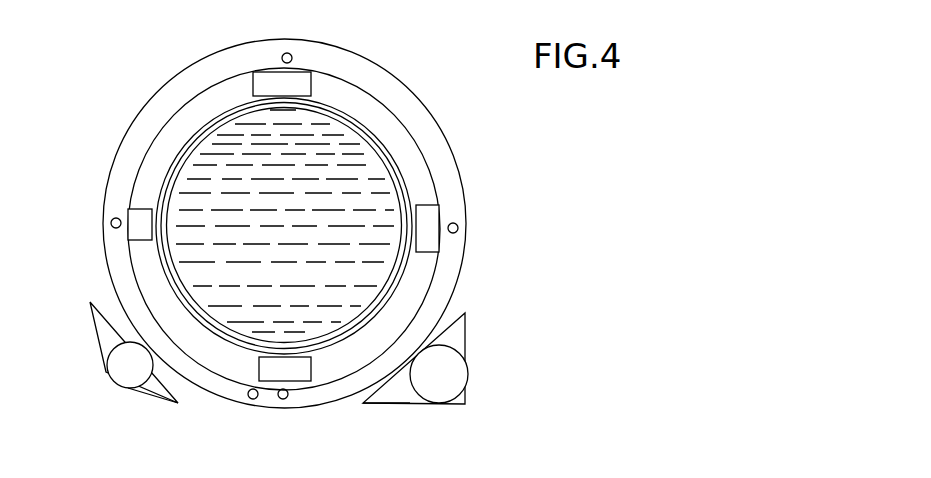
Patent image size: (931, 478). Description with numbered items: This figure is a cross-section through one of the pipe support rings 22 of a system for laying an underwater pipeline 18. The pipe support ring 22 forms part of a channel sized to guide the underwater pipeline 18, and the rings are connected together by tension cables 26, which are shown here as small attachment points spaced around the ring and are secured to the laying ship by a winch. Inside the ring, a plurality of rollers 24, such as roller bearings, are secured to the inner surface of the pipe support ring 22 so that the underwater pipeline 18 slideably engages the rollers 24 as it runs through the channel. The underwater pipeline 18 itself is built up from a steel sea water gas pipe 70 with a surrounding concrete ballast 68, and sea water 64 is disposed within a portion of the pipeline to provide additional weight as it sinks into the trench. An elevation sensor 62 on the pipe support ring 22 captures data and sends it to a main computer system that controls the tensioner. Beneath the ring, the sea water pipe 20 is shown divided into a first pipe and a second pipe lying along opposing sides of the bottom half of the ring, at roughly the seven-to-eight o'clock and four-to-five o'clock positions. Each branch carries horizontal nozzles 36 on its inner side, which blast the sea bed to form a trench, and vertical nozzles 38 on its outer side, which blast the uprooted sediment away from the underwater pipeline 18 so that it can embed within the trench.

The underwater pipeline 18 is at (217, 128).
The sea water pipe 20 is at (122, 367).
The pipe support ring 22 is at (340, 63).
The roller 24 is at (427, 238).
The tension cable 26 is at (284, 53).
The horizontal nozzle 36 is at (157, 393).
The vertical nozzle 38 is at (92, 302).
The elevation sensor 62 is at (252, 401).
The sea water 64 is at (207, 165).
The concrete ballast 68 is at (383, 143).
The steel sea water gas pipe 70 is at (358, 132).